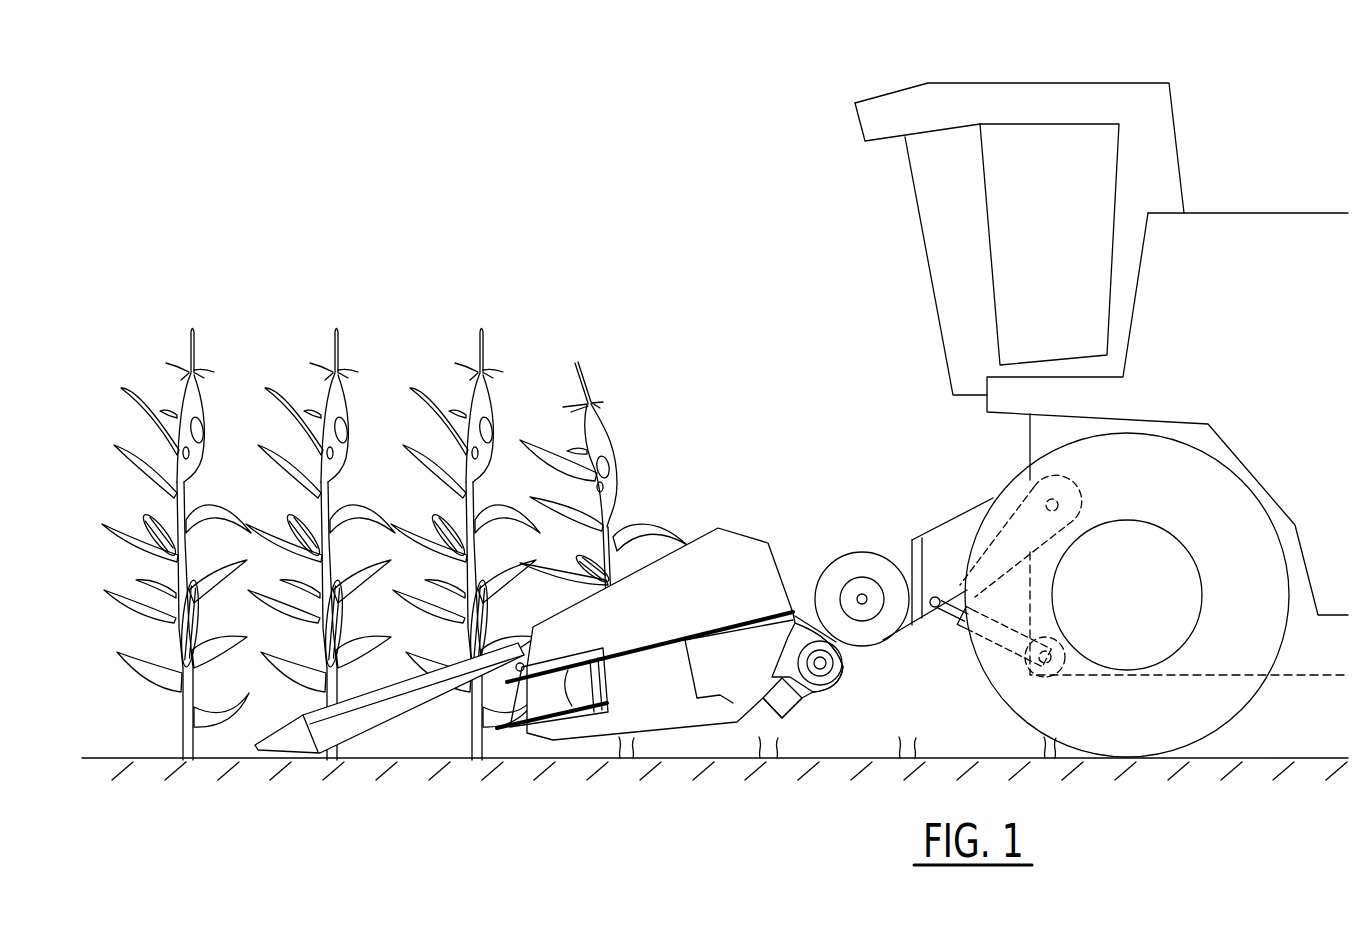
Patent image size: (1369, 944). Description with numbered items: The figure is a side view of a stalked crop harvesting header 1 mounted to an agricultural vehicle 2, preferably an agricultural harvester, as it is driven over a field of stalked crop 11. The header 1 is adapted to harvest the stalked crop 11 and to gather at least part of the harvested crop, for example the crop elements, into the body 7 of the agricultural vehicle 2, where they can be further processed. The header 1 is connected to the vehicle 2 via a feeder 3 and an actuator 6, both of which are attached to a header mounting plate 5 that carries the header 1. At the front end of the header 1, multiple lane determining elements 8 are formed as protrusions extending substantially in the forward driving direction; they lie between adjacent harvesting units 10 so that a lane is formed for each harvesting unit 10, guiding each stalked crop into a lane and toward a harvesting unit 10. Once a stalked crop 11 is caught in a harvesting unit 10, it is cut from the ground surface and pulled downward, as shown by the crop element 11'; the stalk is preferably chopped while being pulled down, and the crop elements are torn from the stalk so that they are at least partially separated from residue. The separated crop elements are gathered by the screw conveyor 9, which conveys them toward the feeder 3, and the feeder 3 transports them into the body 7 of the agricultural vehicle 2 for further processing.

The stalked crop harvesting header 1 is at (773, 415).
The agricultural vehicle 2 is at (758, 131).
The feeder 3 is at (962, 525).
The header mounting plate 5 is at (912, 550).
The actuator 6 is at (952, 607).
The body 7 is at (1283, 228).
The lane determining elements 8 is at (413, 707).
The screw conveyor 9 is at (868, 637).
The harvesting units 10 is at (633, 653).
The stalked crop 11 is at (321, 528).
The crop element 11' is at (479, 300).